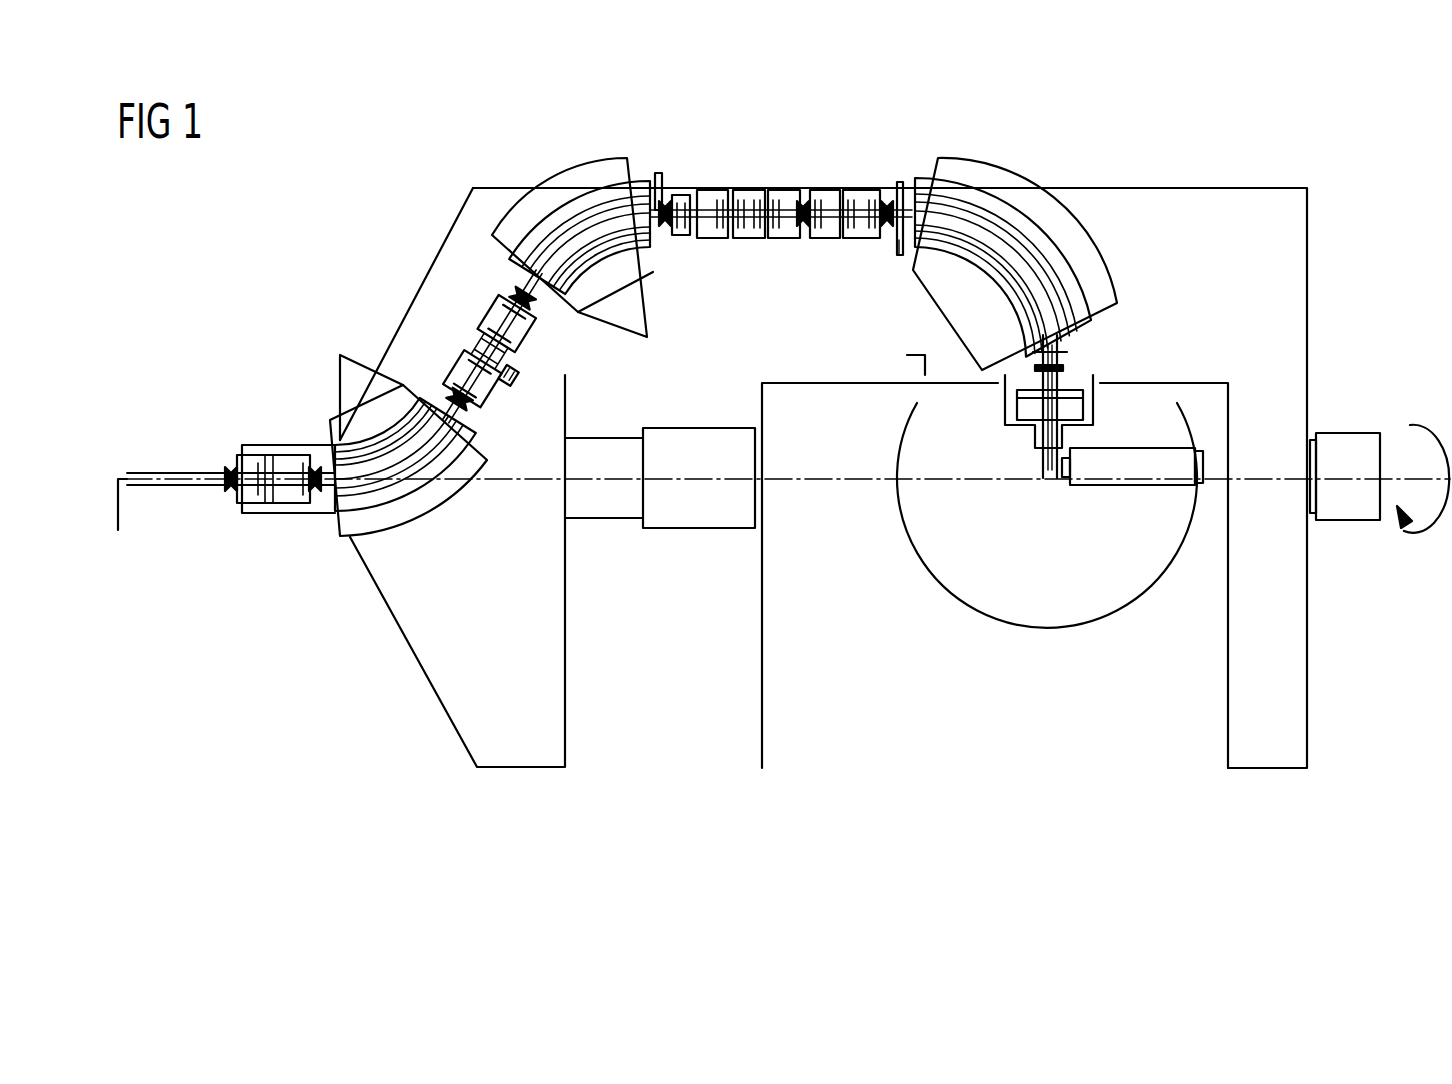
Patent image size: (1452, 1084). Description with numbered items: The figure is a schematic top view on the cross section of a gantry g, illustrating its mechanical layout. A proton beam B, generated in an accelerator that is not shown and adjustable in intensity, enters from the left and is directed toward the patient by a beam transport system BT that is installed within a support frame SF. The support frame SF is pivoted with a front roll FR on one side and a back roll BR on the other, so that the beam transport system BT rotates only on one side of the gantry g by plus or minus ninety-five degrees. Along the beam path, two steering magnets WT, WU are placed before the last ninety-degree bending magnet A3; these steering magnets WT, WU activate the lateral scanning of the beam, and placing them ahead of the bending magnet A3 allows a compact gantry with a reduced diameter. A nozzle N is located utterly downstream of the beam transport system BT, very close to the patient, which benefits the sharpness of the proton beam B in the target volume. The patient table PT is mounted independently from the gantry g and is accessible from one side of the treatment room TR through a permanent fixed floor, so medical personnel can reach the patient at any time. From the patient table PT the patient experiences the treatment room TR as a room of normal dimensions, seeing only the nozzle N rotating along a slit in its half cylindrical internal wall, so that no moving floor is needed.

The gantry g is at (387, 277).
The beam transport system BT is at (473, 277).
The proton beam B is at (178, 487).
The steering magnet WT is at (827, 198).
The steering magnet WU is at (867, 198).
The bending magnet A3 is at (1002, 165).
The support frame SF is at (1306, 312).
The nozzle N is at (1033, 437).
The patient table PT is at (1115, 458).
The treatment room TR is at (995, 561).
The back roll BR is at (690, 528).
The front roll FR is at (1347, 522).